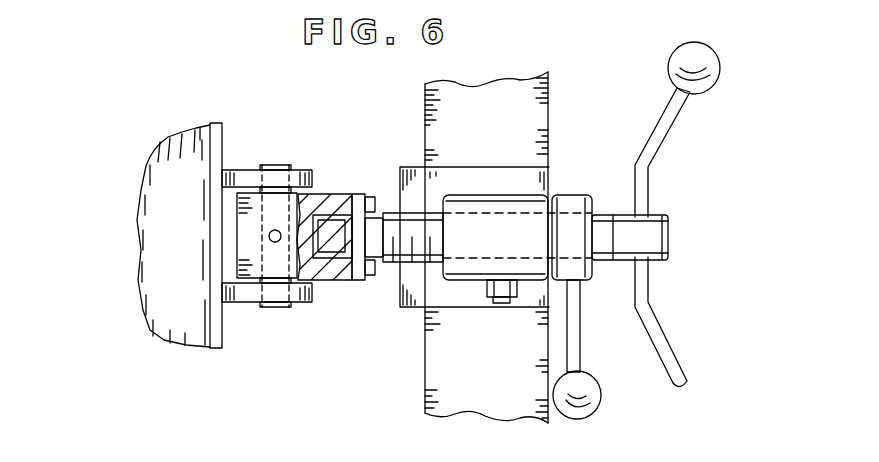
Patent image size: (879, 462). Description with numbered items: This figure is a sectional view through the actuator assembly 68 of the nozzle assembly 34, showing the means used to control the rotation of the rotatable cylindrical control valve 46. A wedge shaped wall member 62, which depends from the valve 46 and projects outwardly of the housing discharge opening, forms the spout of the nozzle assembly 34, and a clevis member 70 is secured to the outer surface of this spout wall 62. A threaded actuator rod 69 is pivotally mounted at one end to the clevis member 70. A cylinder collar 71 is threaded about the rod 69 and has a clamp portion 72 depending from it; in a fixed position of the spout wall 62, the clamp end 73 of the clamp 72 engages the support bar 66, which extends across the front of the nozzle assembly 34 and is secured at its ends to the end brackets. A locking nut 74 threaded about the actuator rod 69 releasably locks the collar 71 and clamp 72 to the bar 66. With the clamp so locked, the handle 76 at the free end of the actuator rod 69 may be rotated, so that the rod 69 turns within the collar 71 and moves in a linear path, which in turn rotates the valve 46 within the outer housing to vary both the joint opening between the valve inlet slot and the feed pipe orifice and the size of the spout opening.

The nozzle assembly 34 is at (346, 364).
The rotatable cylindrical control valve 46 is at (178, 340).
The wedge shaped wall member 62 is at (218, 138).
The support bar 66 is at (494, 127).
The actuator assembly 68 is at (420, 315).
The threaded actuator rod 69 is at (609, 243).
The clevis member 70 is at (242, 175).
The cylinder collar 71 is at (526, 282).
The clamp portion 72 is at (512, 176).
The clamp end 73 is at (402, 188).
The locking nut 74 is at (580, 263).
The handle 76 is at (665, 122).